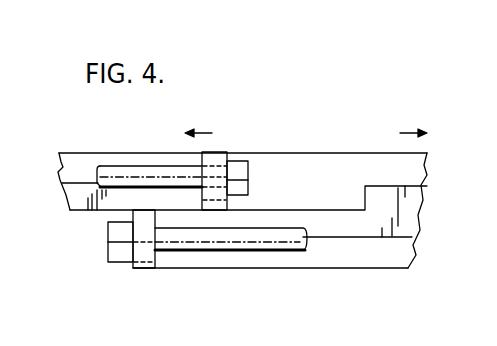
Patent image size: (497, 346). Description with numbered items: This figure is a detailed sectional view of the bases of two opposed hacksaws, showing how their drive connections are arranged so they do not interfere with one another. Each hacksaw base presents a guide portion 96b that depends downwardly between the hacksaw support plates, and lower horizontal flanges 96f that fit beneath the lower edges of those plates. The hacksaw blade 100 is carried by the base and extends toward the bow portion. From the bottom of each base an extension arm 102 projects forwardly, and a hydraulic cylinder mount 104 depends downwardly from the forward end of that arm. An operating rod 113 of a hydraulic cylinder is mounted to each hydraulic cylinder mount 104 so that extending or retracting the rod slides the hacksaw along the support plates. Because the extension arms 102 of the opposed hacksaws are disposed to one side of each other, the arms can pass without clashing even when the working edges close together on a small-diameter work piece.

The guide portion 96b is at (72, 183).
The lower horizontal flanges 96f is at (385, 268).
The hacksaw blade 100 is at (250, 270).
The extension arm 102 is at (168, 153).
The hydraulic cylinder mount 104 is at (212, 158).
The operating rod 113 is at (134, 175).